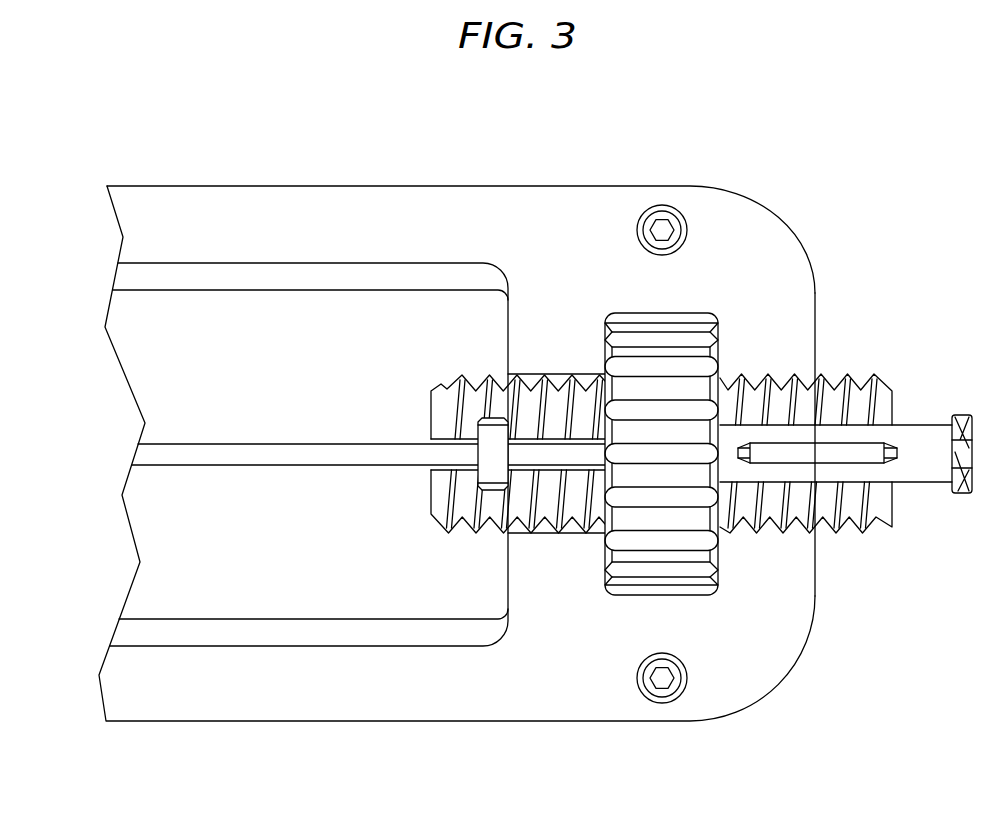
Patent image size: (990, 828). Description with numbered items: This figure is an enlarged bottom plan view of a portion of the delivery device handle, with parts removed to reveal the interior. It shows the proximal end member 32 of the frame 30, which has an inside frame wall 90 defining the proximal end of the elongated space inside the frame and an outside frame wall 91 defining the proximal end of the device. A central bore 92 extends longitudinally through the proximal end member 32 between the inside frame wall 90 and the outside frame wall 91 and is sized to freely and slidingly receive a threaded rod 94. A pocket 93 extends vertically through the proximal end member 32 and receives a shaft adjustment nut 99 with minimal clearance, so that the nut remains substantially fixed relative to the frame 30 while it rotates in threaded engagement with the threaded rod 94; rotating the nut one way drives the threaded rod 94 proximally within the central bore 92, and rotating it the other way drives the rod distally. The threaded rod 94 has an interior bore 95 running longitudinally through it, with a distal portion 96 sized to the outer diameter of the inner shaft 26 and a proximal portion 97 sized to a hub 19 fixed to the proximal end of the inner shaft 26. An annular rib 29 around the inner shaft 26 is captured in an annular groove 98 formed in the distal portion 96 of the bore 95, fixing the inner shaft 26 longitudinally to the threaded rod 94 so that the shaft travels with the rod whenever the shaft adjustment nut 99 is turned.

The frame 30 is at (603, 178).
The proximal end member 32 is at (812, 287).
The outside frame wall 91 is at (818, 343).
The inside frame wall 90 is at (508, 325).
The inner shaft 26 is at (190, 443).
The interior bore 95 is at (450, 440).
The annular groove 98 is at (483, 372).
The distal portion of the bore 96 is at (545, 472).
The annular rib 29 is at (487, 477).
The pocket 93 is at (613, 317).
The shaft adjustment nut 99 is at (680, 313).
The hub 19 is at (929, 485).
The central bore 92 is at (752, 374).
The threaded rod 94 is at (731, 369).
The proximal portion of the bore 97 is at (835, 496).